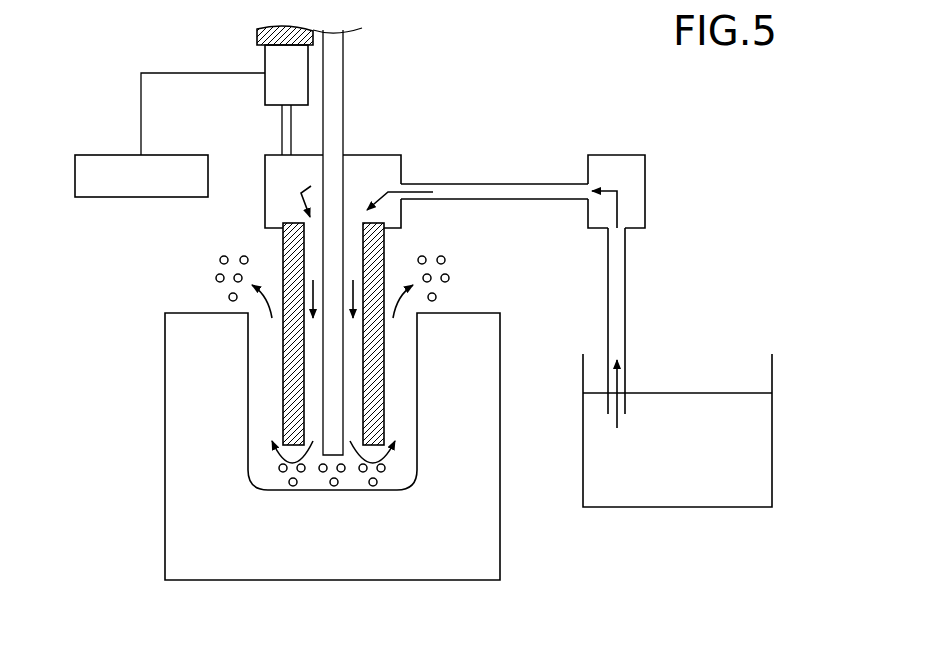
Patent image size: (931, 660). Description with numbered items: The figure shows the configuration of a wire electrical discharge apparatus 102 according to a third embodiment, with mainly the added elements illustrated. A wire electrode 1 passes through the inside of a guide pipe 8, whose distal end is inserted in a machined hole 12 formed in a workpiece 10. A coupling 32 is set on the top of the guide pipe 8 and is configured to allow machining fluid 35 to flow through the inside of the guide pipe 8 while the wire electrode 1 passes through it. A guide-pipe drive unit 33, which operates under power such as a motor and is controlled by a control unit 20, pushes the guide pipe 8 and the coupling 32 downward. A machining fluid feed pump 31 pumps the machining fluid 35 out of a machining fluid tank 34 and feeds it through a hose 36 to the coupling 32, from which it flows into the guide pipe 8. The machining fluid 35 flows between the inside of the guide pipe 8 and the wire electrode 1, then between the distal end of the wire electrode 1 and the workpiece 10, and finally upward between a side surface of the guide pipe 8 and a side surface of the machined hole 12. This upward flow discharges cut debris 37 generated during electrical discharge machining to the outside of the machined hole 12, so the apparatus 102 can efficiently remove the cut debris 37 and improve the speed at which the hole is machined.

The wire electrode 1 is at (343, 77).
The guide pipe 8 is at (283, 247).
The workpiece 10 is at (500, 530).
The machined hole 12 is at (381, 492).
The control unit 20 is at (106, 155).
The machining fluid feed pump 31 is at (617, 155).
The coupling 32 is at (371, 155).
The guide-pipe drive unit 33 is at (265, 99).
The machining fluid tank 34 is at (772, 435).
The machining fluid 35 is at (698, 402).
The hose 36 is at (506, 184).
The cut debris 37 is at (215, 247).
The wire electrical discharge apparatus 102 is at (556, 88).